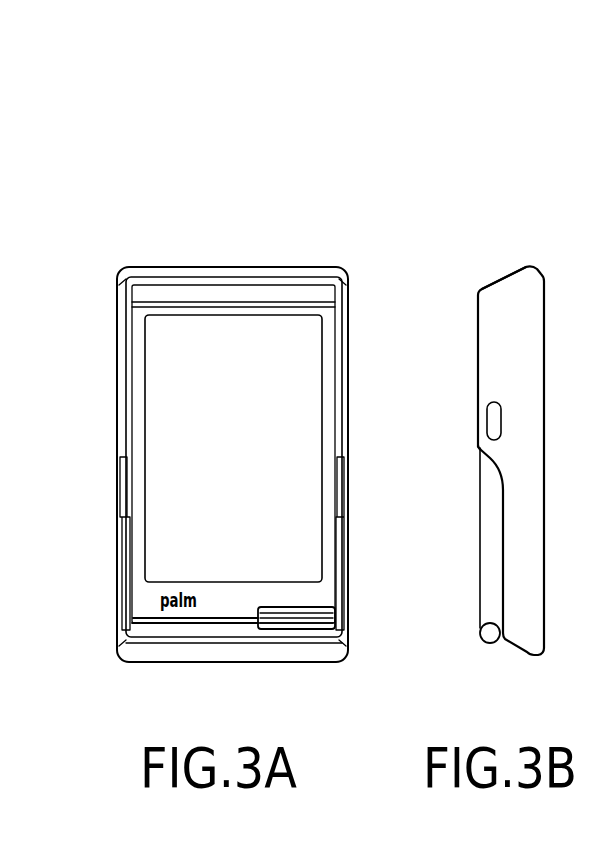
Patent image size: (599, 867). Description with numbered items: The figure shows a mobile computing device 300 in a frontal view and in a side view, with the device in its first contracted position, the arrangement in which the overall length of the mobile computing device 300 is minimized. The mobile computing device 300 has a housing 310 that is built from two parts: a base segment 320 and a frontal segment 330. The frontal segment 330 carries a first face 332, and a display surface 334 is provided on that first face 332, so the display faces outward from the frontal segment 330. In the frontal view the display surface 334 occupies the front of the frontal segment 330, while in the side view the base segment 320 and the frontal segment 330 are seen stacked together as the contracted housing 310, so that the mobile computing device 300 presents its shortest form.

In FIG. 3A, the mobile computing device 300 is at (300, 247).
In FIG. 3B, the mobile computing device 300 is at (550, 249).
In FIG. 3A, the housing 310 is at (215, 247).
In FIG. 3A, the base segment 320 is at (147, 272).
In FIG. 3B, the base segment 320 is at (523, 266).
In FIG. 3A, the frontal segment 330 is at (333, 590).
In FIG. 3B, the frontal segment 330 is at (480, 618).
In FIG. 3A, the first face 332 is at (163, 628).
In FIG. 3A, the display surface 334 is at (233, 448).